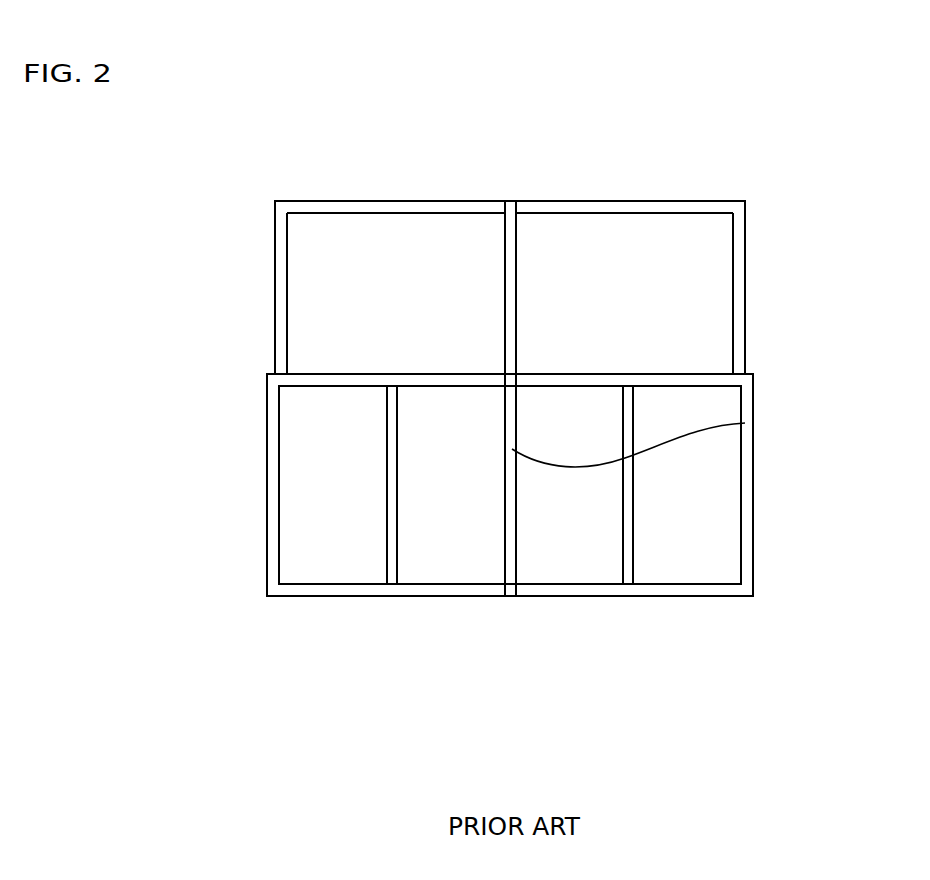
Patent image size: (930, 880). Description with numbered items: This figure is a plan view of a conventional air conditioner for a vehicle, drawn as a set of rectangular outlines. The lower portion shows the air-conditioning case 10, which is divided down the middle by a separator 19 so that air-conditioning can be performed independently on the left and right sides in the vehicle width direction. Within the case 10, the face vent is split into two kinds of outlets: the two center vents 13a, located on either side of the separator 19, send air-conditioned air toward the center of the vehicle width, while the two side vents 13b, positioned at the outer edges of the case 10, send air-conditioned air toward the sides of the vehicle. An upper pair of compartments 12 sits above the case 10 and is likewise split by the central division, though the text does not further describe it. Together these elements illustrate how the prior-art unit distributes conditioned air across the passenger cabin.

The air-conditioning case 10 is at (268, 425).
The upper window 12 is at (402, 279).
The center vent 13a is at (567, 536).
The side vent 13b is at (332, 537).
The separator 19 is at (745, 423).